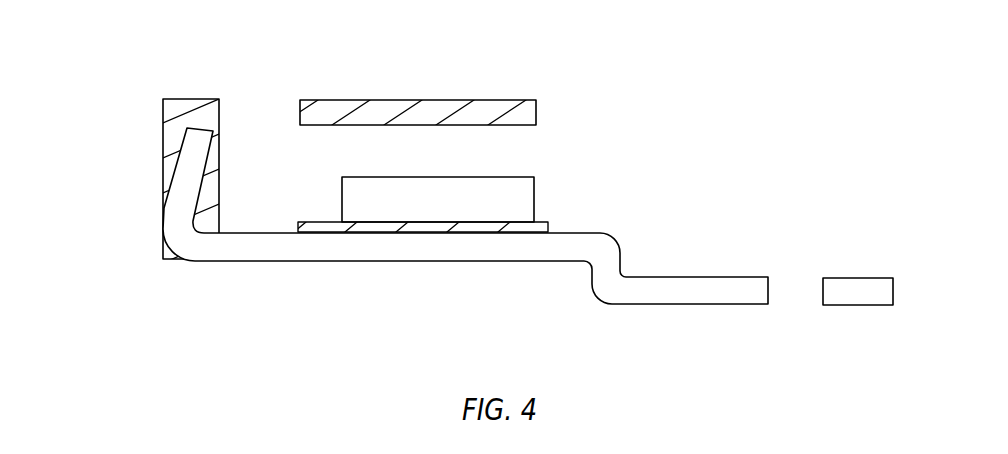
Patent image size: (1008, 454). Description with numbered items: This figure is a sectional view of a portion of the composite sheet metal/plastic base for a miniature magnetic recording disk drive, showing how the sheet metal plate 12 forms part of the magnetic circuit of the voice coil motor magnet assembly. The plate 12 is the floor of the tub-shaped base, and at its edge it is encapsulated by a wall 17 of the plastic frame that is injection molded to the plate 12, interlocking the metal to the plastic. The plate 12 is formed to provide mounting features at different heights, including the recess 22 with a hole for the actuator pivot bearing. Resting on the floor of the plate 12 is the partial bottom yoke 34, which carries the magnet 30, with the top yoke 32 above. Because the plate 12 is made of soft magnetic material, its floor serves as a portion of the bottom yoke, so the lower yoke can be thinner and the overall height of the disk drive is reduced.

The sheet metal plate 12 is at (383, 247).
The wall 17 is at (163, 157).
The recess 22 is at (745, 277).
The magnet 30 is at (498, 199).
The top yoke 32 is at (377, 116).
The partial bottom yoke 34 is at (548, 224).